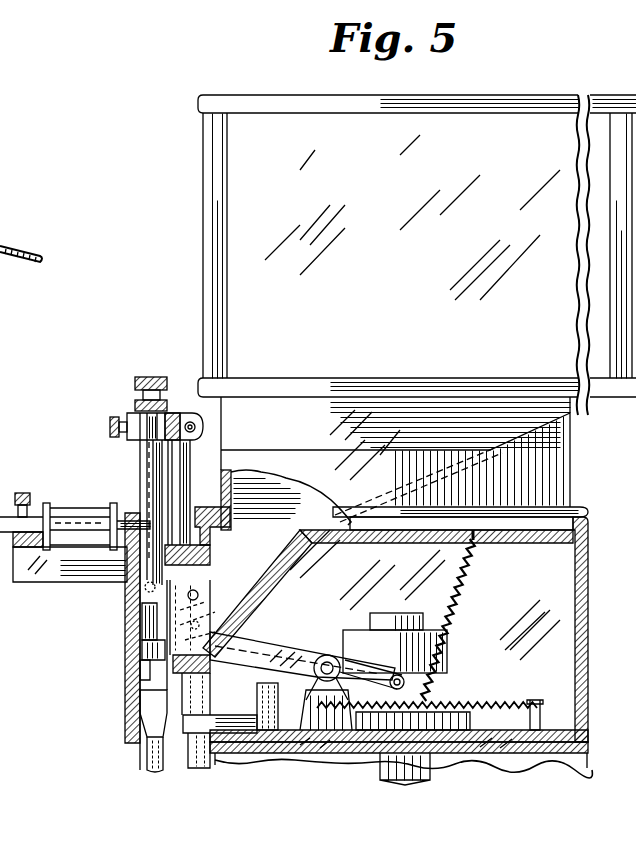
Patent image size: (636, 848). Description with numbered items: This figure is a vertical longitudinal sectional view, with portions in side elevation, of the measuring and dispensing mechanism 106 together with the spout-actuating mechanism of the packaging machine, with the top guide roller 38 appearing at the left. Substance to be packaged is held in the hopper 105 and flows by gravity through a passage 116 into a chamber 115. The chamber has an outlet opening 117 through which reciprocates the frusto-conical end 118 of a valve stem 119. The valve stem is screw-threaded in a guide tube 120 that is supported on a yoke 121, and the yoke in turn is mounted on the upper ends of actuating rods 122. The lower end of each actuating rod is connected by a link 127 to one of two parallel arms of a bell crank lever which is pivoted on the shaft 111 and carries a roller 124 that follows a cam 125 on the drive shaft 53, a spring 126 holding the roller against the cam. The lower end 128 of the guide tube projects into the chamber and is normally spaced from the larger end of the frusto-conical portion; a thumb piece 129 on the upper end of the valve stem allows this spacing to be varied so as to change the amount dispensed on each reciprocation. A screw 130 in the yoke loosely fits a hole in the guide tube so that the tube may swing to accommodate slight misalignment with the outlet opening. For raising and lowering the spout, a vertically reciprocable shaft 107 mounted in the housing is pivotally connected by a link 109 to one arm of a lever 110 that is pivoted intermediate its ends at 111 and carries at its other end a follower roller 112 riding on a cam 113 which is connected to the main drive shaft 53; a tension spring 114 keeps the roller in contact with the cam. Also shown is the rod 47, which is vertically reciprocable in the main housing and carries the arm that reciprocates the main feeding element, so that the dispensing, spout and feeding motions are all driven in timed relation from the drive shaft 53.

The top guide roller 38 is at (60, 517).
The rod 47 is at (205, 763).
The drive shaft 53 is at (410, 780).
The hopper 105 is at (232, 338).
The measuring and dispensing mechanism 106 is at (130, 670).
The vertically reciprocable shaft 107 is at (128, 710).
The link 109 is at (127, 597).
The lever 110 is at (290, 643).
The pivot 111 is at (327, 662).
The follower roller 112 is at (397, 676).
The cam 113 is at (443, 660).
The tension spring 114 is at (468, 590).
The chamber 115 is at (128, 603).
The passage 116 is at (228, 542).
The outlet opening 117 is at (127, 683).
The frusto-conical end 118 is at (130, 650).
The valve stem 119 is at (150, 490).
The guide tube 120 is at (140, 465).
The yoke 121 is at (204, 419).
The actuating rods 122 is at (185, 450).
The roller 124 is at (300, 700).
The cam 125 is at (457, 707).
The spring 126 is at (510, 700).
The link 127 is at (198, 595).
The end of the guide tube 128 is at (140, 633).
The thumb piece 129 is at (143, 377).
The screw 130 is at (113, 427).